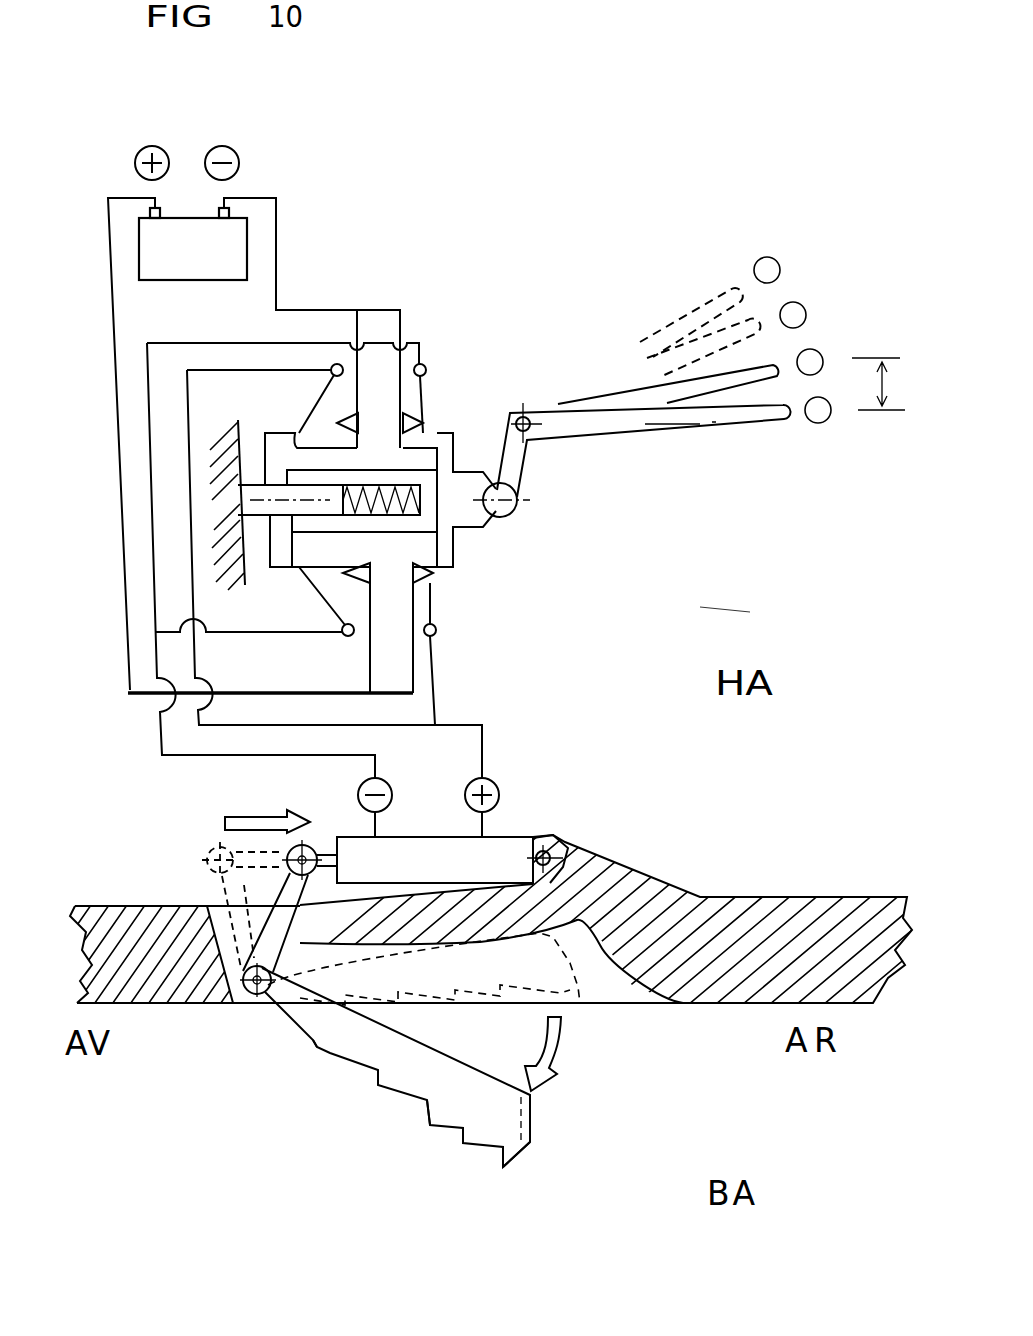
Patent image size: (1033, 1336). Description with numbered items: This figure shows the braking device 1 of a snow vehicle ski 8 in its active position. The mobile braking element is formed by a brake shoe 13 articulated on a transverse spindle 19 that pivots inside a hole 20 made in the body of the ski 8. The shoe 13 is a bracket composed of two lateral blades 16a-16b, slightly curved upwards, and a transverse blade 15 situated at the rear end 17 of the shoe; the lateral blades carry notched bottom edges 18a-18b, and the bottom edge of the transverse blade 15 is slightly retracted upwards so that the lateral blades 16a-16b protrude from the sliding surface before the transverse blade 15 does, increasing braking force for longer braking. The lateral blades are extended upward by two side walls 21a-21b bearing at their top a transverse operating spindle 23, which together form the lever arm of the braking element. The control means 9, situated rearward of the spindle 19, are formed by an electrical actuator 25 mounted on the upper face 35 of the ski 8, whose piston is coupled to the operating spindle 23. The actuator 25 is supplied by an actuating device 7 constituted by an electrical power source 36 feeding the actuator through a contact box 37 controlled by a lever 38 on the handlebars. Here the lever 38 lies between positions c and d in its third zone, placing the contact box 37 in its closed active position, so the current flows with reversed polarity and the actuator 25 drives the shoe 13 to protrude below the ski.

The electrical power source 36 is at (262, 243).
The contact box 37 is at (443, 325).
The lever 38 is at (540, 392).
The actuating device 7 is at (603, 137).
The braking device 1 is at (700, 607).
The electrical actuator 25 is at (493, 847).
The control means 9 is at (243, 806).
The transverse operating spindle 23 is at (290, 846).
The side walls 21a-21b is at (276, 910).
The ski 8 is at (618, 878).
The upper face of the ski 35 is at (757, 892).
The hole 20 is at (254, 990).
The transverse spindle 19 is at (258, 993).
The brake shoe 13 is at (354, 1100).
The lateral blades 16a-16b is at (332, 1040).
The notched bottom edges of the lateral blades 18a-18b is at (430, 1122).
The transverse blade 15 is at (530, 1115).
The rear end of the shoe 17 is at (530, 1163).